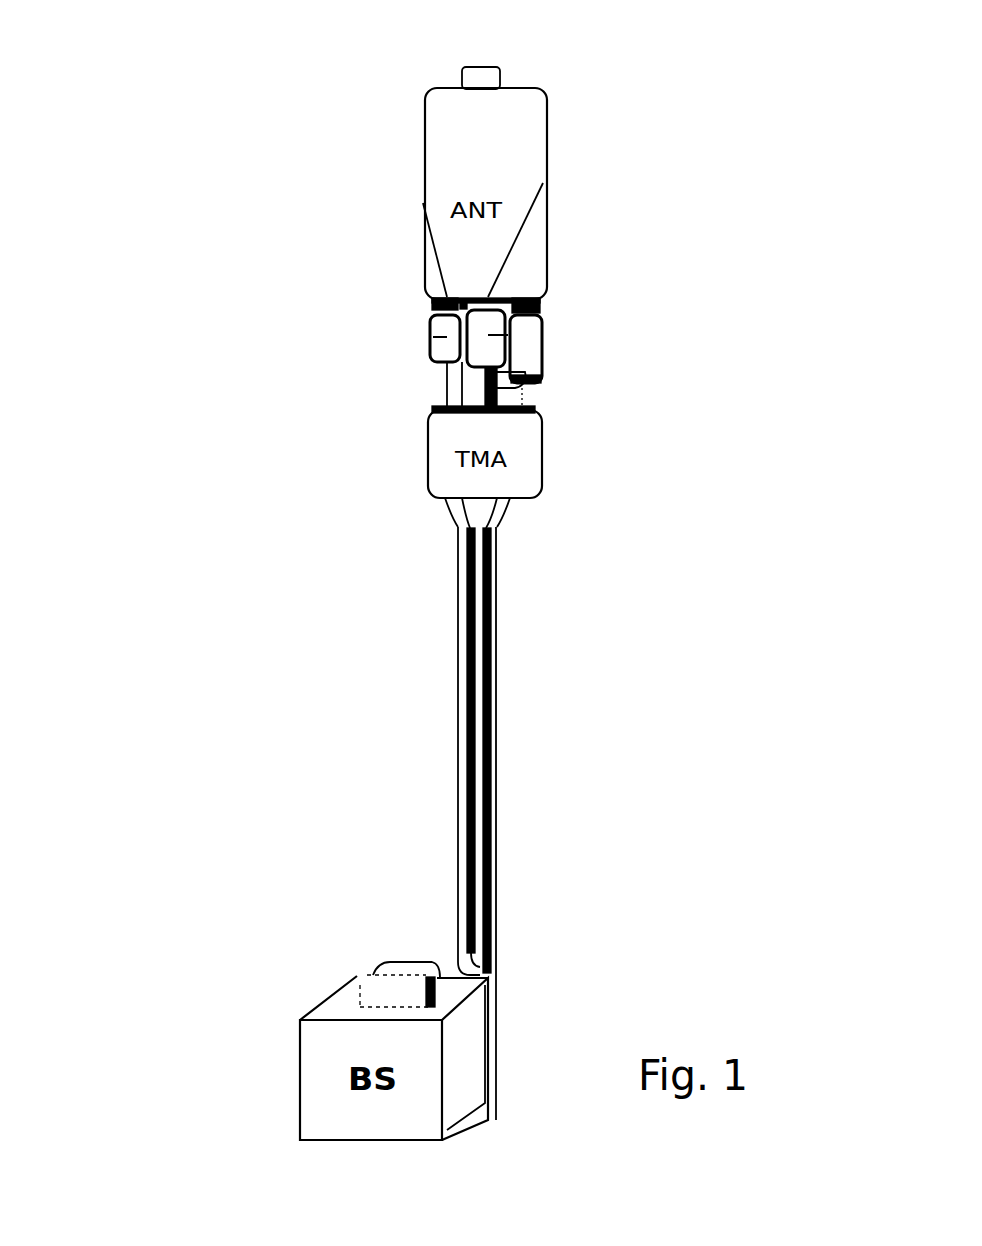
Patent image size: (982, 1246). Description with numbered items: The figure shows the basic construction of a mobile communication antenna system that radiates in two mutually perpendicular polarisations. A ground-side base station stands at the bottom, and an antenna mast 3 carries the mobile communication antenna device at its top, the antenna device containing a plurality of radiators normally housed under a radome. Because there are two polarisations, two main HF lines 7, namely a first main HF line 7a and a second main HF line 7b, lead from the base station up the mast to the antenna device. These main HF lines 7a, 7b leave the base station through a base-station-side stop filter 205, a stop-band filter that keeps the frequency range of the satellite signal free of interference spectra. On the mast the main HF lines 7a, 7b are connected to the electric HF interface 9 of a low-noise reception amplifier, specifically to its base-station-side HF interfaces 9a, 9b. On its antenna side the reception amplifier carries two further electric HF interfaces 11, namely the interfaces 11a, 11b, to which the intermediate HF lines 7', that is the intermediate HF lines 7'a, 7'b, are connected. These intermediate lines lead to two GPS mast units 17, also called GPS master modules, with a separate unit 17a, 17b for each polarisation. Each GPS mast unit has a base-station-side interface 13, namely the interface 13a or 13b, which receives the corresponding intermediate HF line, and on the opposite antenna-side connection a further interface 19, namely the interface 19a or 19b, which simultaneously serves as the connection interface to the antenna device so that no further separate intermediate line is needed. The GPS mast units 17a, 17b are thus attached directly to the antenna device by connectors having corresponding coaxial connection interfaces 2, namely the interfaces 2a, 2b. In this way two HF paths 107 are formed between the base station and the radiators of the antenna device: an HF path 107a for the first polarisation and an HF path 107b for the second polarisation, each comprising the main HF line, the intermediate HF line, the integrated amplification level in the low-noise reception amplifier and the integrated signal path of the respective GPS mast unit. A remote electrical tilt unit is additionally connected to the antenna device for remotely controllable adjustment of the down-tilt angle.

The antenna mast 3 is at (488, 78).
The coaxial connection point or interface 2 is at (473, 193).
The coaxial connection point or interface 2a is at (423, 203).
The coaxial connection point or interface 2b is at (543, 183).
The antenna-side interface 19 is at (477, 240).
The antenna-side interface 19a is at (432, 297).
The antenna-side interface 19b is at (500, 297).
The GPS mast unit 17 is at (466, 315).
The GPS mast unit 17a is at (436, 318).
The GPS mast unit 17b is at (540, 316).
The base-station-side interface 13 is at (462, 314).
The base-station-side interface 13a is at (433, 337).
The base-station-side interface 13b is at (508, 335).
The intermediate HF line 7' is at (463, 365).
The intermediate HF line 7'a is at (309, 365).
The intermediate HF line 7'b is at (633, 380).
The antenna-side electric HF interface 11 is at (453, 409).
The antenna-side electric HF interface 11a is at (440, 400).
The antenna-side electric HF interface 11b is at (498, 410).
The base-station-side electric HF interface 9 is at (463, 536).
The base-station-side electric HF interface 9a is at (443, 497).
The base-station-side electric HF interface 9b is at (535, 500).
The HF path 107 is at (501, 750).
The HF path 107a is at (458, 673).
The HF path 107b is at (498, 642).
The main HF line 7 is at (461, 823).
The main HF line 7a is at (460, 762).
The main HF line 7b is at (497, 707).
The base-station-side stop filter 205 is at (383, 993).